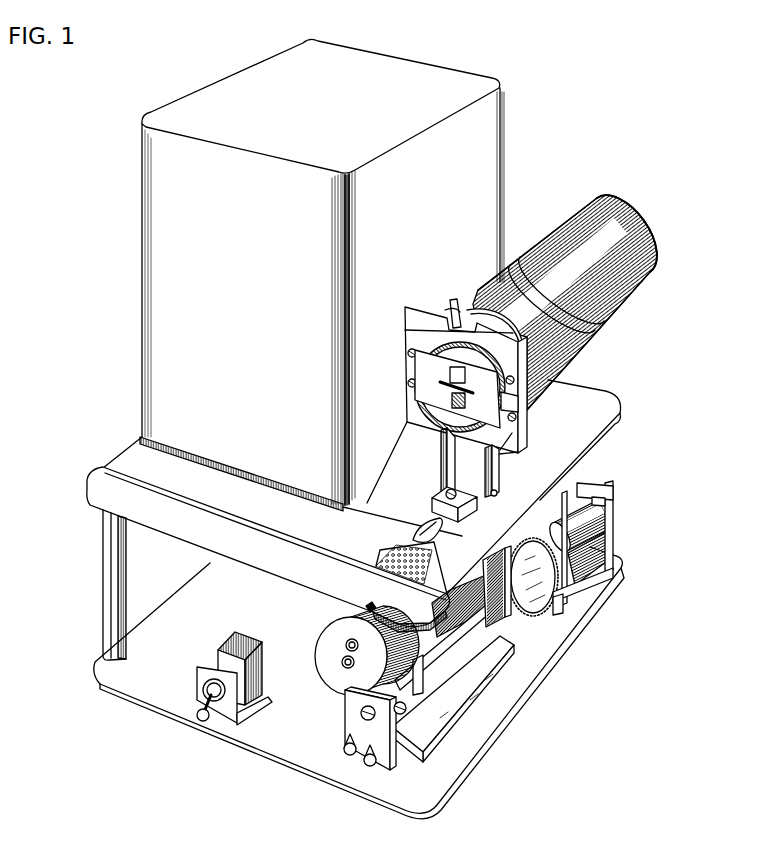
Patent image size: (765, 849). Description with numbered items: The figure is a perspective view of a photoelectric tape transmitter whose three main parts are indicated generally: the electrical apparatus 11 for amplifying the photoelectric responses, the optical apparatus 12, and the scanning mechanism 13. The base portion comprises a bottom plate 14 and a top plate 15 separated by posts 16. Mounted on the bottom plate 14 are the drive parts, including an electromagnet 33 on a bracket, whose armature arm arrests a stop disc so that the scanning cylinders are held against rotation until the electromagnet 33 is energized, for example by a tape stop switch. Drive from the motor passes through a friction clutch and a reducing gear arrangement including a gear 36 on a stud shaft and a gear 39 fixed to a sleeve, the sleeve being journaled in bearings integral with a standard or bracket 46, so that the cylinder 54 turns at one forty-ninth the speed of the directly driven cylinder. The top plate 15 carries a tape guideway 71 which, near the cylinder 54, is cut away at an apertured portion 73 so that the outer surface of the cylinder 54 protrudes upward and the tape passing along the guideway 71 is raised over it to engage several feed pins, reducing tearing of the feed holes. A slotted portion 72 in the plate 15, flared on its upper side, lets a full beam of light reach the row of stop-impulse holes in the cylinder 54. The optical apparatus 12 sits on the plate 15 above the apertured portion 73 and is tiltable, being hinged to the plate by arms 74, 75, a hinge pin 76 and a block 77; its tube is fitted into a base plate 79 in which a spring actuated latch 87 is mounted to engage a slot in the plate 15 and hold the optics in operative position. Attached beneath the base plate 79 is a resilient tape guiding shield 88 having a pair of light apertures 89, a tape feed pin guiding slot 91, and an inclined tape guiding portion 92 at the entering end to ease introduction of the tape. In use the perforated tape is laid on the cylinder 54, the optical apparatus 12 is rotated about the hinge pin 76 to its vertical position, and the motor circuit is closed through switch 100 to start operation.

The electrical apparatus 11 is at (141, 290).
The optical apparatus 12 is at (652, 280).
The scanning mechanism 13 is at (492, 604).
The bottom plate 14 is at (566, 634).
The top plate 15 is at (622, 417).
The posts 16 is at (107, 556).
The electromagnet 33 is at (600, 526).
The gear 36 is at (540, 582).
The gear 39 is at (605, 568).
The standard or bracket 46 is at (464, 662).
The cylinder 54 is at (386, 553).
The tape guideway 71 is at (133, 462).
The slotted portion 72 is at (446, 526).
The apertured portion 73 is at (429, 563).
The arm 74 is at (441, 478).
The arm 75 is at (494, 477).
The hinge pin 76 is at (497, 494).
The block 77 is at (470, 500).
The base plate 79 is at (511, 346).
The spring actuated latch 87 is at (474, 298).
The tape guiding shield 88 is at (420, 368).
The light apertures 89 is at (452, 398).
The tape feed pin guiding slot 91 is at (521, 440).
The inclined tape guiding portion 92 is at (519, 404).
The switch 100 is at (196, 714).